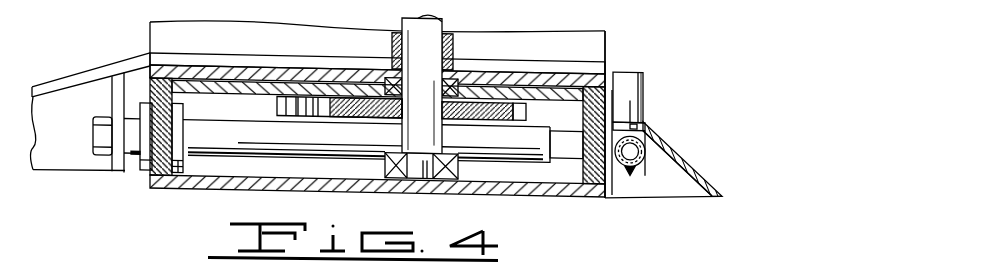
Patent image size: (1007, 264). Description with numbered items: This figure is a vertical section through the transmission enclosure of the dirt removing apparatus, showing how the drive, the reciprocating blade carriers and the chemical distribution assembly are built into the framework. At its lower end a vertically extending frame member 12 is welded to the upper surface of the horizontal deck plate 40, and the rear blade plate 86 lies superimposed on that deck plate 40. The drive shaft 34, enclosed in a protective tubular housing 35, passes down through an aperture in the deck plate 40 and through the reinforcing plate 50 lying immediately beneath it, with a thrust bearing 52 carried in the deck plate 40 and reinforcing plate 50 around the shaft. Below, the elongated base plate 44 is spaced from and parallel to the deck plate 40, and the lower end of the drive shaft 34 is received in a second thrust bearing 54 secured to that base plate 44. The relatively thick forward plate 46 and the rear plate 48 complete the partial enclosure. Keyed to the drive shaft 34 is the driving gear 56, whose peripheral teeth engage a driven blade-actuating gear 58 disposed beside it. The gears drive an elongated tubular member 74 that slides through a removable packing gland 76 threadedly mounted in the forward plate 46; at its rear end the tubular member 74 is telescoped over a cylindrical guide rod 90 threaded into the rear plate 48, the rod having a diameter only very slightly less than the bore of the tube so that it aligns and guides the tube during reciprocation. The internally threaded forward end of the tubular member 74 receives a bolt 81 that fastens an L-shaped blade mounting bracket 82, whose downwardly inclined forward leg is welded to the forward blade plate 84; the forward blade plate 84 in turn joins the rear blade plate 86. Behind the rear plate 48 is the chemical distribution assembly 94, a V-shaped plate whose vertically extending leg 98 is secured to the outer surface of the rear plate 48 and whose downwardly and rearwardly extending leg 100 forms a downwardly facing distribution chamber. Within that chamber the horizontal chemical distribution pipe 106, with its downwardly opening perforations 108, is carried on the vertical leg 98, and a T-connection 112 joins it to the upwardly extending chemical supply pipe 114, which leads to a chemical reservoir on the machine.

The vertically extending frame member 12 is at (218, 45).
The drive shaft 34 is at (428, 34).
The protective tubular housing 35 is at (392, 35).
The deck plate 40 is at (583, 73).
The base plate 44 is at (515, 190).
The forward plate 46 is at (147, 176).
The rear plate 48 is at (592, 171).
The reinforcing plate 50 is at (540, 90).
The thrust bearing 52 is at (453, 66).
The second thrust bearing 54 is at (385, 162).
The driving gear 56 is at (465, 111).
The driven blade-actuating gear 58 is at (275, 104).
The tubular member 74 is at (226, 142).
The packing gland 76 is at (180, 173).
The bolt 81 is at (102, 128).
The L-shaped blade mounting bracket 82 is at (70, 162).
The forward blade plate 84 is at (72, 77).
The rear blade plate 86 is at (267, 58).
The guide rod 90 is at (577, 140).
The chemical distribution assembly 94 is at (686, 134).
The vertically extending leg 98 is at (617, 176).
The downwardly and rearwardly extending leg 100 is at (695, 160).
The chemical distribution pipe 106 is at (643, 153).
The perforation 108 is at (629, 167).
The T-connection 112 is at (643, 114).
The chemical supply pipe 114 is at (633, 76).